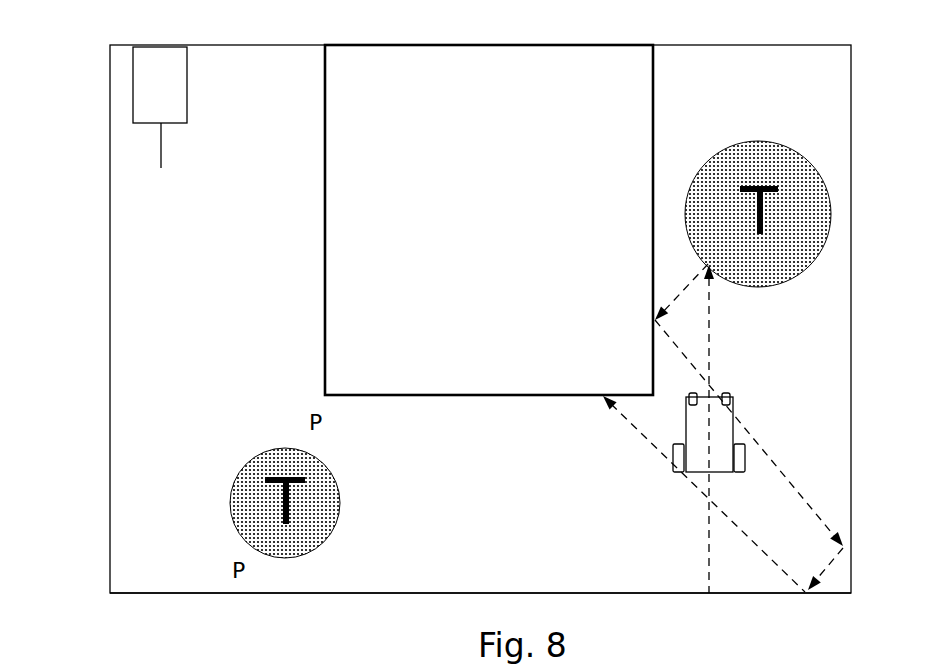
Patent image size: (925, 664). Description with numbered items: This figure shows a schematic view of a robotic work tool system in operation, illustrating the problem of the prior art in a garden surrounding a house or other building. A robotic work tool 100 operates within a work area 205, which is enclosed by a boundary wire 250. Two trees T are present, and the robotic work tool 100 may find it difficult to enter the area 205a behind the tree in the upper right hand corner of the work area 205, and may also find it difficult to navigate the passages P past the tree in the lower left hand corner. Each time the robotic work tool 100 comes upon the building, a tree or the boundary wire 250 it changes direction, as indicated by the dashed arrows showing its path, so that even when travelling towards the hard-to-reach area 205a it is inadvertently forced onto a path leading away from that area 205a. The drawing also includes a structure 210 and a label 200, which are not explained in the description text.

The robotic work tool 100 is at (738, 442).
The work environment / area 200 is at (118, 394).
The work area 205 is at (343, 596).
The area behind the tree 205a is at (752, 100).
The docking station 210 is at (140, 72).
The boundary wire 250 is at (807, 593).